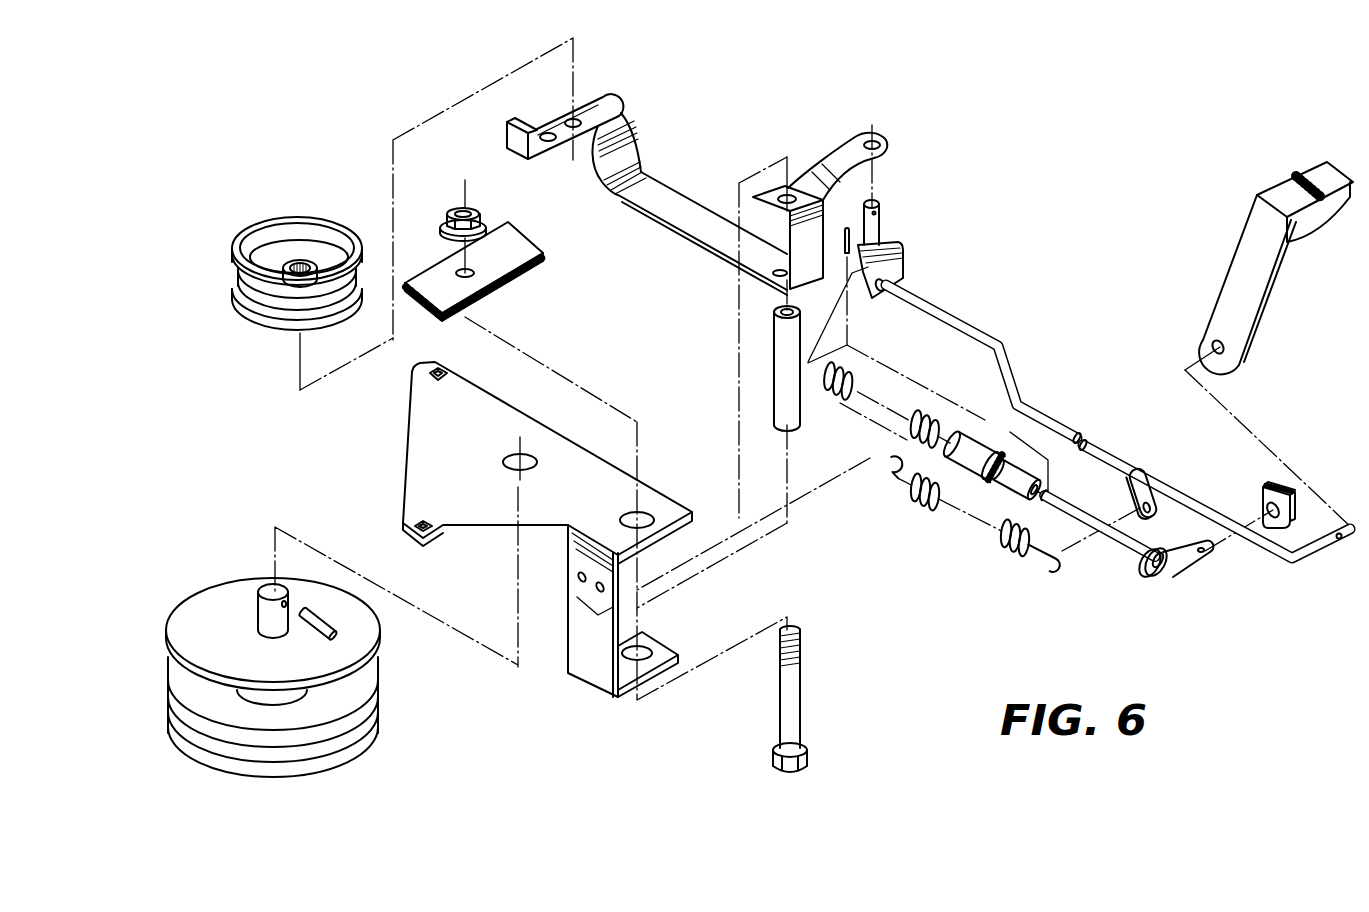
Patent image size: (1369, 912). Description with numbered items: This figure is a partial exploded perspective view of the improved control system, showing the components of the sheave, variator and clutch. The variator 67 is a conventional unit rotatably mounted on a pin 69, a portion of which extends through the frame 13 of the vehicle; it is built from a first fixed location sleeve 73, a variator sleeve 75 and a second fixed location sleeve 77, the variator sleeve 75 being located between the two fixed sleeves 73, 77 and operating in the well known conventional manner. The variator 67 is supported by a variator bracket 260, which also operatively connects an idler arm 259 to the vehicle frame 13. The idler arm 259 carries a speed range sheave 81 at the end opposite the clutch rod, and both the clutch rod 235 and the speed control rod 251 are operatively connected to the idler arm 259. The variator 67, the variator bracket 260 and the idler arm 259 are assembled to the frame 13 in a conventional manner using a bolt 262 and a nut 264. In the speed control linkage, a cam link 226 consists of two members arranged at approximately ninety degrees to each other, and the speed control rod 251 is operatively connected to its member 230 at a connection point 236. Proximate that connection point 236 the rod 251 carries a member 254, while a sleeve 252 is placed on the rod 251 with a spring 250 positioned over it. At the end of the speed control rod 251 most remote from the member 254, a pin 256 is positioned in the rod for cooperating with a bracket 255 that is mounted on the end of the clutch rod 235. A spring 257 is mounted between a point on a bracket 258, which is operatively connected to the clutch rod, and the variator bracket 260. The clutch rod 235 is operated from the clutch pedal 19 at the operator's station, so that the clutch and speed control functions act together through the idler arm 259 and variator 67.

The frame 13 is at (537, 242).
The clutch pedal 19 is at (1270, 188).
The variator 67 is at (297, 640).
The pin 69 is at (268, 582).
The first fixed location sleeve 73 is at (371, 750).
The variator sleeve 75 is at (378, 699).
The second fixed location sleeve 77 is at (359, 600).
The speed range sheave 81 is at (303, 215).
The cam link 226 is at (1277, 470).
The member 230 is at (1297, 493).
The clutch rod 235 is at (1274, 565).
The connection point 236 is at (1262, 506).
The spring 250 is at (840, 396).
The speed control rod 251 is at (1116, 548).
The sleeve 252 is at (968, 445).
The member 254 is at (1150, 572).
The bracket 255 is at (906, 268).
The pin 256 is at (844, 260).
The spring 257 is at (1020, 556).
The bracket 258 is at (1132, 491).
The idler arm 259 is at (700, 248).
The variator bracket 260 is at (579, 466).
The bolt 262 is at (778, 705).
The nut 264 is at (480, 208).